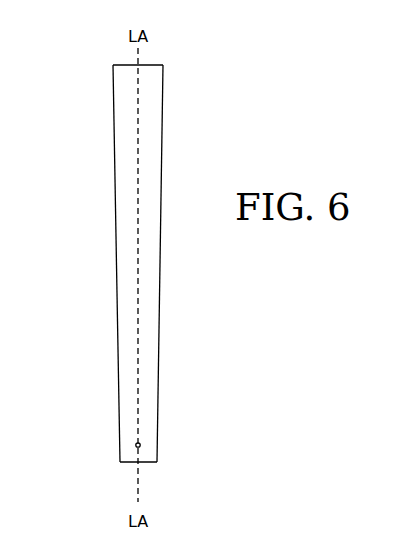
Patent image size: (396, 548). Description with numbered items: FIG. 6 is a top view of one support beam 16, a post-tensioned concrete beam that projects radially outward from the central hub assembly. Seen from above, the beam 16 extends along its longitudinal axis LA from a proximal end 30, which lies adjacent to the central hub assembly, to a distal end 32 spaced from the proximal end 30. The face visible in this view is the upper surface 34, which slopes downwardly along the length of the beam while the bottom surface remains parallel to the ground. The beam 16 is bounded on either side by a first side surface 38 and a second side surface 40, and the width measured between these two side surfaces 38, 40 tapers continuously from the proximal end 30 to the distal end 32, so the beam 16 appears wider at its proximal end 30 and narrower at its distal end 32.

The beam 16 is at (107, 290).
The proximal end 30 is at (150, 65).
The distal end 32 is at (148, 462).
The upper surface 34 is at (128, 205).
The first side surface 38 is at (119, 393).
The second side surface 40 is at (161, 252).